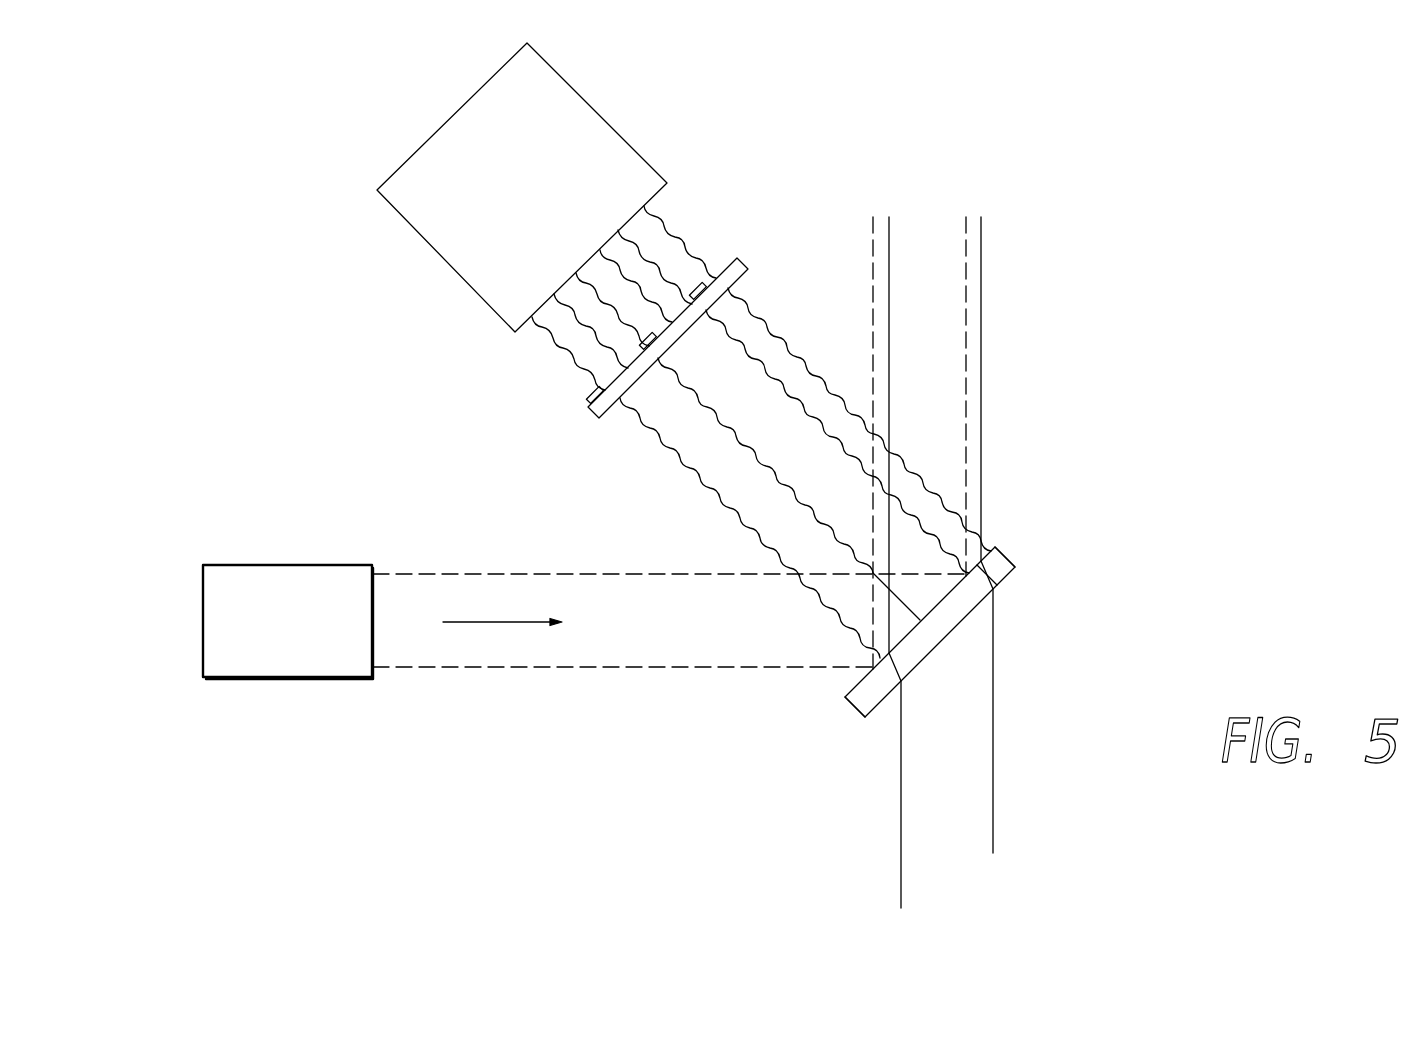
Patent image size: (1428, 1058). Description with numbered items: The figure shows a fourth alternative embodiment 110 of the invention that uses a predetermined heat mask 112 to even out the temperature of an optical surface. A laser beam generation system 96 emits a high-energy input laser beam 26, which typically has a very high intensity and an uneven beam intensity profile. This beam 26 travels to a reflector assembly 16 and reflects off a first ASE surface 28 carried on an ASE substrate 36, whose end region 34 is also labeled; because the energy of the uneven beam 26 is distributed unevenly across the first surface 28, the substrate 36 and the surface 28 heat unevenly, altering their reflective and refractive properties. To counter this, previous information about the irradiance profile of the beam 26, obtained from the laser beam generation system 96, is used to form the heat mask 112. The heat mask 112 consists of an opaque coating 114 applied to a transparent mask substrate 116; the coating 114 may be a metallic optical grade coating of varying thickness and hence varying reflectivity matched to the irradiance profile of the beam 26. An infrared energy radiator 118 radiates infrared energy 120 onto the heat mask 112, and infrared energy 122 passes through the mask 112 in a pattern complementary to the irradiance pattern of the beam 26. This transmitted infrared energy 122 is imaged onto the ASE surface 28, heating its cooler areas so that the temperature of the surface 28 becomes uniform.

The fourth alternative embodiment 110 is at (1232, 154).
The heat mask 112 is at (776, 217).
The opaque coating 114 is at (617, 393).
The transparent mask substrate 116 is at (599, 418).
The infrared energy radiator 118 is at (587, 100).
The infrared energy 120 is at (692, 250).
The transmitted infrared energy 122 is at (797, 347).
The mirror assembly 16 is at (942, 562).
The first ASE surface 28 is at (845, 694).
The ASE substrate 36 is at (1008, 559).
The mirror end 34 is at (873, 715).
The laser beam generation system 96 is at (288, 563).
The high-energy input laser beam 26 is at (467, 622).